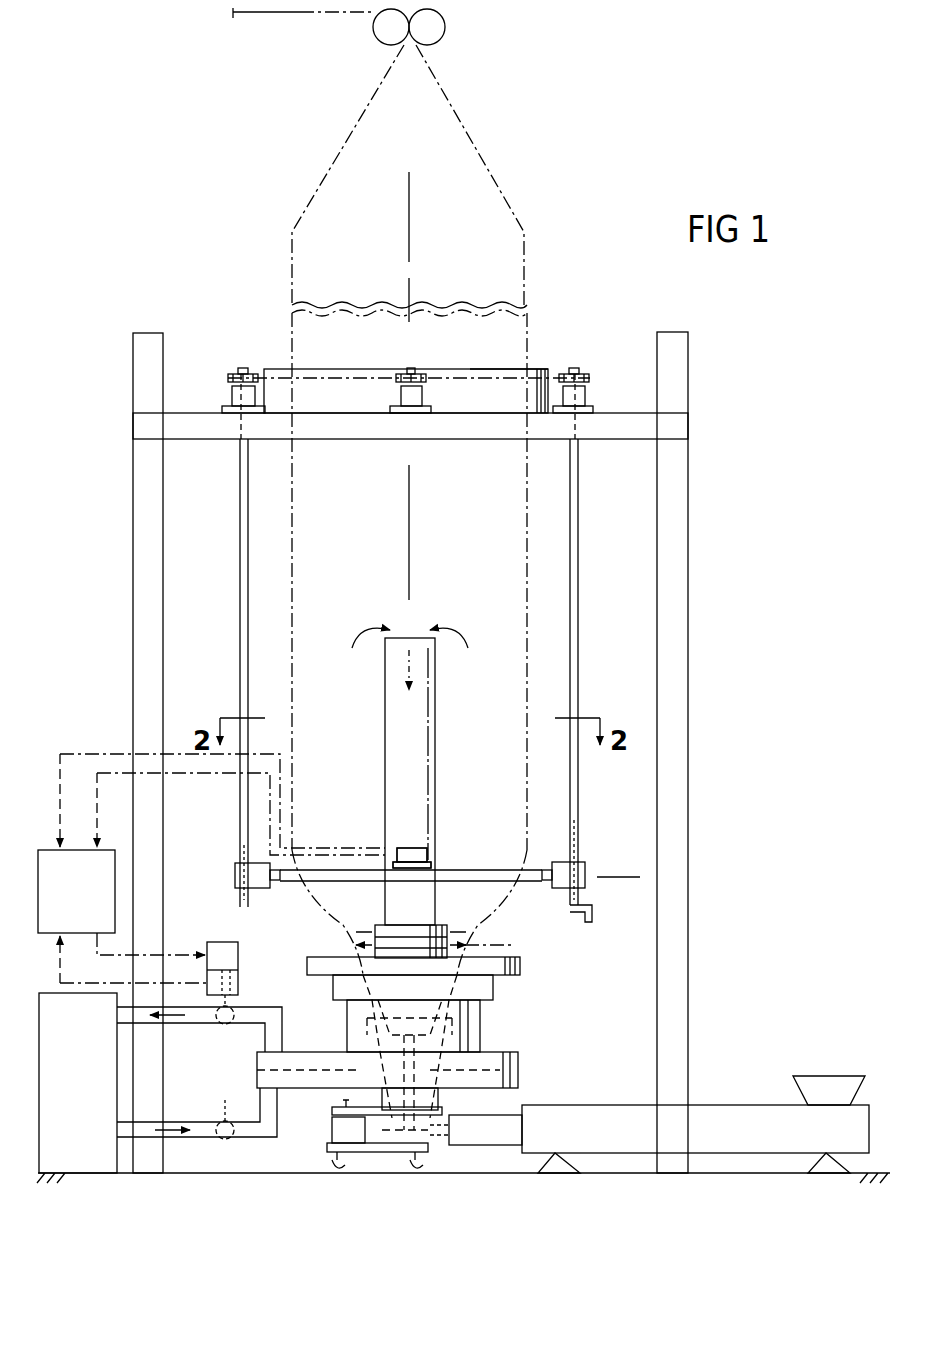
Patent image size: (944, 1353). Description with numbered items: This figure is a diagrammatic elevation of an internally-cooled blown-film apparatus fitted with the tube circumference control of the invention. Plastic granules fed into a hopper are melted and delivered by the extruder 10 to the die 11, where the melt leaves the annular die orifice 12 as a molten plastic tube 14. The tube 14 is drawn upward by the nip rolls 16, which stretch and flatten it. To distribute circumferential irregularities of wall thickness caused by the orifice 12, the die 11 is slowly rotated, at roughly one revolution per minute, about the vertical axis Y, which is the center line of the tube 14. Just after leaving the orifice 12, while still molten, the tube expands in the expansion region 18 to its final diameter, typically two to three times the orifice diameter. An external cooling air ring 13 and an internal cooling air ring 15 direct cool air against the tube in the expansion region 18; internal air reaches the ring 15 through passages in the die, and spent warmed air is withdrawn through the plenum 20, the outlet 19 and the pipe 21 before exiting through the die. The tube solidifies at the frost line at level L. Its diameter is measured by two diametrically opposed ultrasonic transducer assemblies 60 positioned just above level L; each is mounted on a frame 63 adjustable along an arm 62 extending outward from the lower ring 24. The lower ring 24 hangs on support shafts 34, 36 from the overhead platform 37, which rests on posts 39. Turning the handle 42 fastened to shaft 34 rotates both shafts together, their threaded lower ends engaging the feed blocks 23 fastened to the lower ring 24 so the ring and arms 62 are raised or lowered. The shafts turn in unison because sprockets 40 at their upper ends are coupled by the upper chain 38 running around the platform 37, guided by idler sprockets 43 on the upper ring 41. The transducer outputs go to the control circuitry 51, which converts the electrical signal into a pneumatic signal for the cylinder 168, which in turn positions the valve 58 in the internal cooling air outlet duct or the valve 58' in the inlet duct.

The extruder 10 is at (575, 1105).
The die 11 is at (480, 1031).
The annular die orifice 12 is at (480, 1005).
The external cooling air ring 13 is at (520, 963).
The molten plastic tube 14 is at (528, 565).
The internal cooling air ring 15 is at (352, 926).
The nip rolls 16 is at (376, 30).
The expansion region 18 is at (492, 922).
The outlet 19 is at (403, 628).
The plenum 20 is at (520, 1060).
The pipe 21 is at (385, 738).
The feed blocks 23 is at (235, 886).
The lower ring 24 is at (528, 885).
The support shaft 34 is at (579, 846).
The support shaft 36 is at (240, 848).
The overhead platform 37 is at (192, 412).
The upper chain 38 is at (482, 376).
The posts 39 is at (143, 578).
The sprockets 40 is at (237, 372).
The upper ring 41 is at (335, 388).
The handle 42 is at (596, 912).
The idler sprockets 43 is at (405, 371).
The control circuitry 51 is at (88, 904).
The valve 58 is at (222, 1031).
The valve 58' is at (237, 1136).
The ultrasonic transducer assemblies 60 is at (423, 838).
The arms 62 is at (432, 863).
The frame 63 is at (408, 847).
The cylinder 168 is at (220, 945).
The level L is at (620, 877).
The vertical axis Y is at (411, 535).